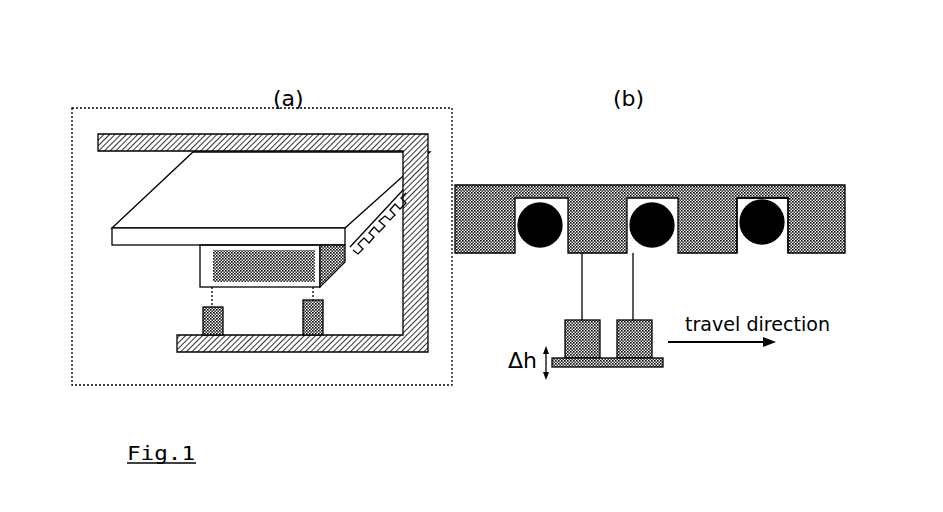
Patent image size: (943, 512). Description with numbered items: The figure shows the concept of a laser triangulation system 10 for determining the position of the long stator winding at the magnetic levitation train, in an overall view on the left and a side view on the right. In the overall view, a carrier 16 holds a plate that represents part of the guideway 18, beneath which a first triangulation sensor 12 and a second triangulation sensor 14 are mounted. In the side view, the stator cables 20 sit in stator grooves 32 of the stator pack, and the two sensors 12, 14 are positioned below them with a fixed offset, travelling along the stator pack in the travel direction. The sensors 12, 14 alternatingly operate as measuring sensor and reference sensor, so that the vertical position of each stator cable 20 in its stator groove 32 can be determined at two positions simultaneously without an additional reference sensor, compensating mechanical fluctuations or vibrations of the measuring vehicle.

The triangulation system 10 is at (389, 90).
The first triangulation sensor 12 is at (309, 320).
The second triangulation sensor 14 is at (209, 320).
The carrier 16 is at (425, 135).
The guideway 18 is at (224, 198).
The stator cable 20 is at (531, 205).
The stator groove 32 is at (783, 252).